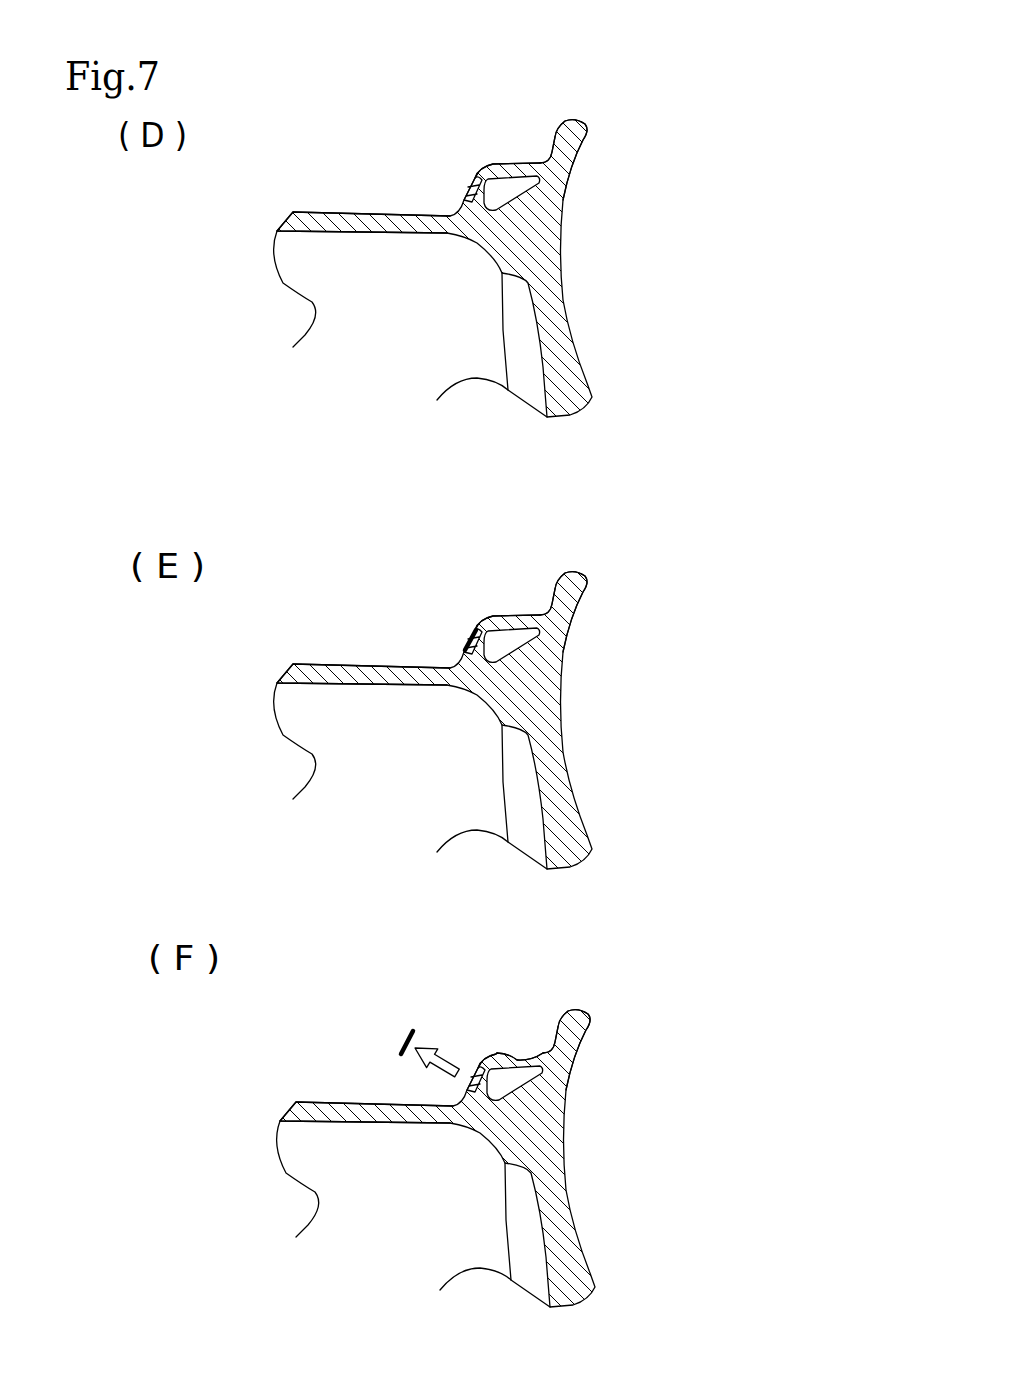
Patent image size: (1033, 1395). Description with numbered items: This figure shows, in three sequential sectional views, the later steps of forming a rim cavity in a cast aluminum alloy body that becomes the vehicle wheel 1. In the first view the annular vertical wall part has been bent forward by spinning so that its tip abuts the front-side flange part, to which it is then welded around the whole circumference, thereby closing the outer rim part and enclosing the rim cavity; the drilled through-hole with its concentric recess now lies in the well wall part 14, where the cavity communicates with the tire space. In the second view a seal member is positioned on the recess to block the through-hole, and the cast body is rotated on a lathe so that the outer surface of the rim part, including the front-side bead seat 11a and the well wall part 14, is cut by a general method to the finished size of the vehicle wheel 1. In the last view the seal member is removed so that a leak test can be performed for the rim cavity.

The vehicle wheel 1 is at (516, 697).
The front-side bead seat 11a is at (527, 1053).
The well wall part 14 is at (485, 1070).